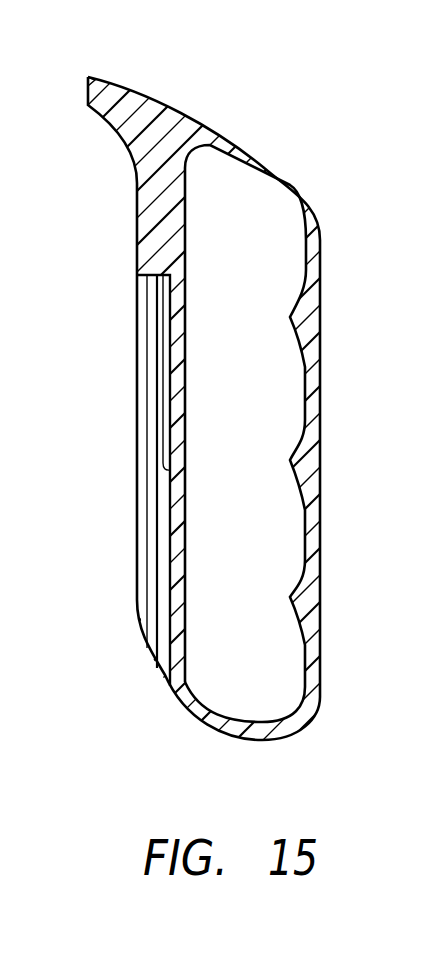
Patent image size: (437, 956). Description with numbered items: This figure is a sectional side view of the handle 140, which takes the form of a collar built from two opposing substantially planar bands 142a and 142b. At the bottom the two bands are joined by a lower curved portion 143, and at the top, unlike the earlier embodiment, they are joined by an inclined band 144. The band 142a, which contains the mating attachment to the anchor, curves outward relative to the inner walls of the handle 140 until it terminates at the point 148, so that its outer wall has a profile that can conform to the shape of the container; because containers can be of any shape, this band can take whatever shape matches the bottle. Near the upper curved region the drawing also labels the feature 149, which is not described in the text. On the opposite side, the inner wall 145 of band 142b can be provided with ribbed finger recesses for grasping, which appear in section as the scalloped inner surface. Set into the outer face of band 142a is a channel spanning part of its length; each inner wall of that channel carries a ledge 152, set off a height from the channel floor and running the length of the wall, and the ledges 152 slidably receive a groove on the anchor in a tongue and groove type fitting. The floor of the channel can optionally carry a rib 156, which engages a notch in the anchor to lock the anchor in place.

The handle 140 is at (237, 128).
The band 142a is at (137, 486).
The band 142b is at (322, 455).
The lower curved portion 143 is at (200, 715).
The inclined band 144 is at (303, 187).
The inner wall 145 is at (305, 390).
The point 148 is at (93, 74).
The curved neck portion 149 is at (121, 137).
The ledge 152 is at (147, 392).
The rib 156 is at (163, 463).